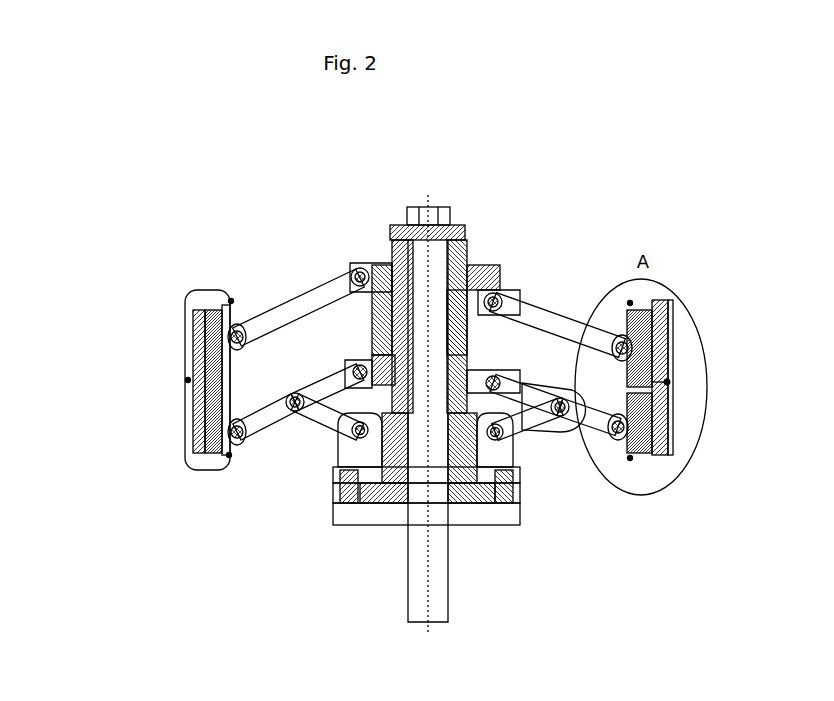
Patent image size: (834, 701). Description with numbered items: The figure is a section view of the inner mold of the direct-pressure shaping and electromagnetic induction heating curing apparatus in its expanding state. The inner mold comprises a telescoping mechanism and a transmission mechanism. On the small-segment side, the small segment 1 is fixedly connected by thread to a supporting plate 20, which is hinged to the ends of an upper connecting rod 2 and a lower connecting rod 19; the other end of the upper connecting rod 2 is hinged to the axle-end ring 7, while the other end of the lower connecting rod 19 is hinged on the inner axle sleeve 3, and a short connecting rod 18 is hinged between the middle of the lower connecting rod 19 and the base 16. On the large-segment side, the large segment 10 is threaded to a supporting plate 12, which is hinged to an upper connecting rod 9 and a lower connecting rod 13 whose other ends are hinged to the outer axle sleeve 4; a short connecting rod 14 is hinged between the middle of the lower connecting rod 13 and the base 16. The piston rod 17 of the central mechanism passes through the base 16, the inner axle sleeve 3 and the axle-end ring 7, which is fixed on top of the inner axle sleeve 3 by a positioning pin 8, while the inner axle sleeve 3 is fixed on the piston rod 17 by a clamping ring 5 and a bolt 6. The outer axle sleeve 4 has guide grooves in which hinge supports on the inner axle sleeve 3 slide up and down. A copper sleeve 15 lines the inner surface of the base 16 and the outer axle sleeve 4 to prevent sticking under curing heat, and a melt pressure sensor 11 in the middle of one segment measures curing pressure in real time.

The small segment 1 is at (185, 302).
The upper connecting rod 2 is at (270, 323).
The inner axle sleeve 3 is at (372, 355).
The outer axle sleeve 4 is at (352, 266).
The clamping ring 5 is at (390, 227).
The bolt 6 is at (437, 207).
The axle-end ring 7 is at (468, 265).
The positioning pin 8 is at (485, 290).
The upper connecting rod 9 is at (553, 295).
The large segment 10 is at (657, 307).
The melt pressure sensor 11 is at (667, 382).
The supporting plate 12 is at (655, 428).
The lower connecting rod 13 is at (645, 455).
The short connecting rod 14 is at (574, 437).
The copper sleeve 15 is at (515, 428).
The base 16 is at (493, 528).
The piston rod 17 is at (417, 443).
The short connecting rod 18 is at (318, 422).
The lower connecting rod 19 is at (270, 430).
The supporting plate 20 is at (190, 415).